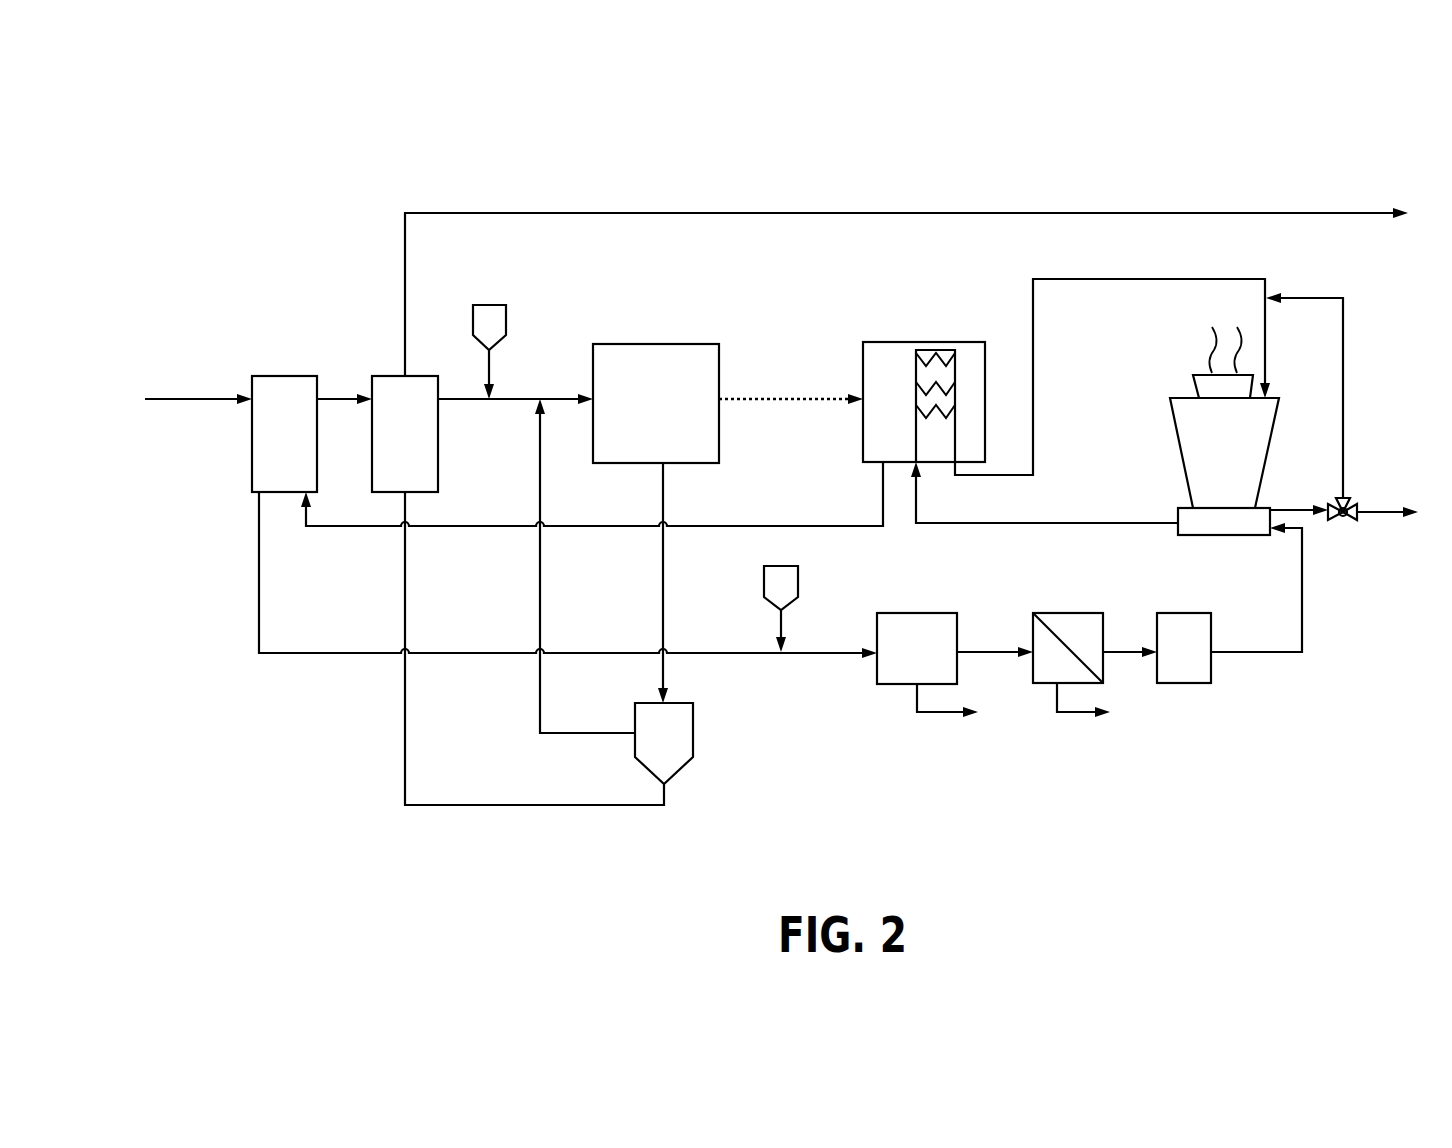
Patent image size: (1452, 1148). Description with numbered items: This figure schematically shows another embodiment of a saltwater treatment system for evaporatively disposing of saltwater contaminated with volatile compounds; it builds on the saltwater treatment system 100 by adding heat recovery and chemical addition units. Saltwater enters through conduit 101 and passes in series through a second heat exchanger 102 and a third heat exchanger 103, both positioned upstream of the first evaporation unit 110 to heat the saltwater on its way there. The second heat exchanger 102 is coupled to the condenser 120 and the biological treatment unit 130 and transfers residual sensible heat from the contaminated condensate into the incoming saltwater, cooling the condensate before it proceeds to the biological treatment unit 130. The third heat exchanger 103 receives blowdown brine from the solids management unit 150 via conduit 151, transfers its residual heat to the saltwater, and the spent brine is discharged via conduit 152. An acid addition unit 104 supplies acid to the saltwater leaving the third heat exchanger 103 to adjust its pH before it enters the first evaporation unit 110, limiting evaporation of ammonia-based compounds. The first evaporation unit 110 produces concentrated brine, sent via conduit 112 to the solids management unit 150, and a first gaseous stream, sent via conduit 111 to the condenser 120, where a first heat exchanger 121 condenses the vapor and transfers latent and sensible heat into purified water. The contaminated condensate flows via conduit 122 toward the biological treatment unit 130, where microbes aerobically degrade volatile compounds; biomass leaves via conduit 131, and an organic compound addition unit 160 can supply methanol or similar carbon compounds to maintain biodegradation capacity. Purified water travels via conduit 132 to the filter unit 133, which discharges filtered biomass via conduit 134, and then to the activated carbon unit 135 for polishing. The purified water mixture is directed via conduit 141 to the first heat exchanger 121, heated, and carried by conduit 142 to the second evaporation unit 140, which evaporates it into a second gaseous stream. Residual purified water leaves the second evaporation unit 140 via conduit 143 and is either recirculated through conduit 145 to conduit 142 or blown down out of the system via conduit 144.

The saltwater treatment system 100 is at (277, 118).
The conduit 101 is at (199, 398).
The second heat exchanger 102 is at (300, 449).
The third heat exchanger 103 is at (422, 449).
The acid addition unit 104 is at (473, 305).
The first evaporation unit 110 is at (593, 344).
The conduit 111 is at (790, 398).
The conduit 112 is at (663, 548).
The condenser 120 is at (863, 342).
The first heat exchanger 121 is at (952, 446).
The conduit 122 is at (788, 526).
The biological treatment unit 130 is at (932, 661).
The conduit 131 is at (917, 712).
The conduit 132 is at (1003, 652).
The filter unit 133 is at (1096, 639).
The conduit 134 is at (1057, 712).
The activated carbon unit 135 is at (1200, 661).
The second evaporation unit 140 is at (1242, 468).
The conduit 141 is at (1068, 523).
The conduit 142 is at (1061, 278).
The conduit 143 is at (1300, 510).
The conduit 144 is at (1370, 512).
The conduit 145 is at (1342, 322).
The solids management unit 150 is at (682, 751).
The conduit 151 is at (502, 805).
The conduit 152 is at (692, 213).
The organic compound addition unit 160 is at (764, 566).